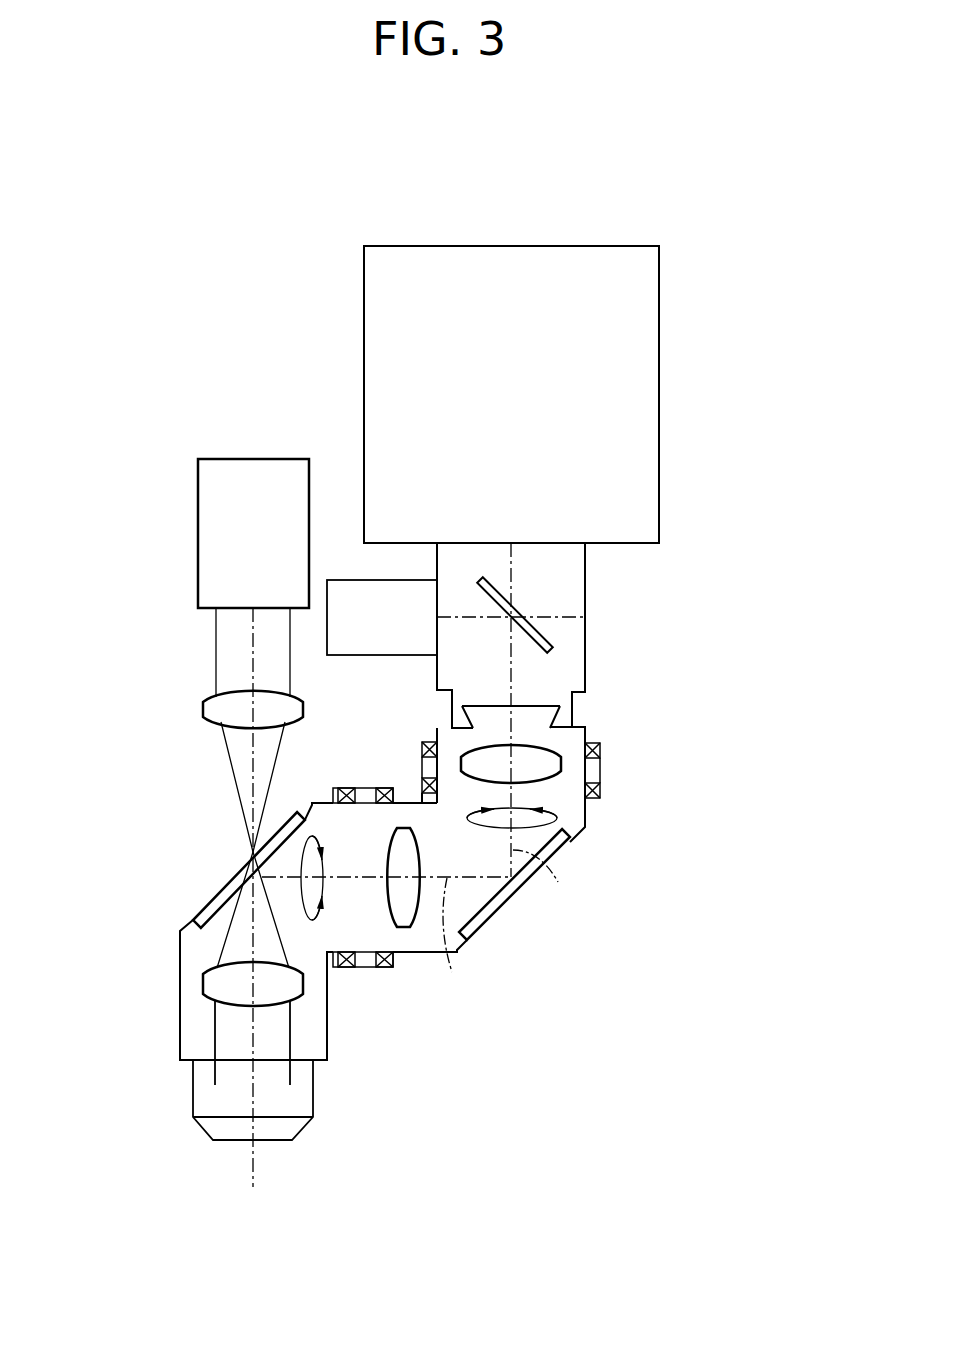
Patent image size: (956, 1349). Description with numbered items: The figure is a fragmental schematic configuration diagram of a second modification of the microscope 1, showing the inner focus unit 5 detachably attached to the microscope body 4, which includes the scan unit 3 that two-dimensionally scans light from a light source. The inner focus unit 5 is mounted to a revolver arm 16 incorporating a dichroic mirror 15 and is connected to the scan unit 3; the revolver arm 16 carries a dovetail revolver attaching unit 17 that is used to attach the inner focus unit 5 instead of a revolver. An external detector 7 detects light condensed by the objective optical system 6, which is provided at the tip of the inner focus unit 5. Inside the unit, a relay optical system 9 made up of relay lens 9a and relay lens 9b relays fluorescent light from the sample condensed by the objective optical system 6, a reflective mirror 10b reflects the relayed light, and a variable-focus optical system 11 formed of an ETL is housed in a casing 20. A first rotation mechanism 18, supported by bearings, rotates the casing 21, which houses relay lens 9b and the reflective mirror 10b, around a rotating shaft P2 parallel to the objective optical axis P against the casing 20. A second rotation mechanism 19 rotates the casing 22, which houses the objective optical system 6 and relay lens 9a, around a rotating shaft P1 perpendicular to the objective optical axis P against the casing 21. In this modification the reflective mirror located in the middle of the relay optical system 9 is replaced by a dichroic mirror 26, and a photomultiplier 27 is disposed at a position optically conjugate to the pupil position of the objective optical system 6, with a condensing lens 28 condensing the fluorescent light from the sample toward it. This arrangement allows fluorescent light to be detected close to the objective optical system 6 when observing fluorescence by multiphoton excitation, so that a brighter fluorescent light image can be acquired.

The microscope 1 is at (725, 192).
The scan unit 3 is at (364, 328).
The microscope body 4 is at (668, 367).
The inner focus unit 5 is at (524, 897).
The objective optical system 6 is at (193, 1092).
The external detector 7 is at (340, 580).
The relay optical system 9 is at (361, 841).
The relay lens 9a is at (203, 984).
The relay lens 9b is at (392, 830).
The reflective mirror 10b is at (491, 925).
The variable-focus optical system 11 is at (549, 782).
The dichroic mirror 15 is at (549, 634).
The revolver arm 16 is at (586, 572).
The revolver attaching unit 17 is at (470, 713).
The first rotation mechanism 18 is at (605, 778).
The second rotation mechanism 19 is at (355, 972).
The casing 20 is at (586, 731).
The casing 21 is at (408, 954).
The casing 22 is at (180, 1026).
The dichroic mirror 26 is at (222, 882).
The photomultiplier 27 is at (232, 459).
The condensing lens 28 is at (203, 710).
The objective optical axis P is at (258, 1160).
The rotating shaft P1 is at (452, 943).
The rotating shaft P2 is at (563, 874).